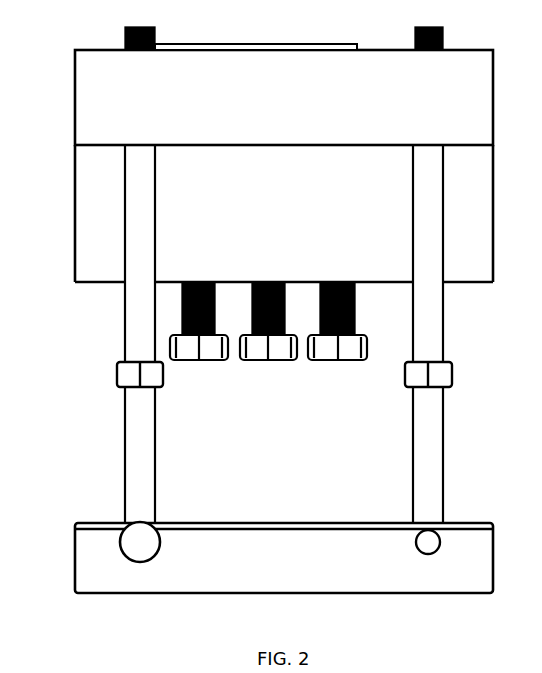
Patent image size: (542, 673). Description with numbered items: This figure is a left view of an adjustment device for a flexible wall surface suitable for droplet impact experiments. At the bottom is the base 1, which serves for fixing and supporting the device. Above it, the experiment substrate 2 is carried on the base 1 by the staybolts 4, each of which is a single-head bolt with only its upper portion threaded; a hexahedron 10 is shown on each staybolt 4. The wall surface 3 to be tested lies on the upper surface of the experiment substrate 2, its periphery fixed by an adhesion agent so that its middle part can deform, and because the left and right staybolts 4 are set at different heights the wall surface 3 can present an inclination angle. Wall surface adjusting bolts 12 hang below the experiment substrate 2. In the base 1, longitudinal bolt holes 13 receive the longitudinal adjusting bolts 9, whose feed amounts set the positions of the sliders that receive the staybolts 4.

The base 1 is at (237, 542).
The experiment substrate 2 is at (95, 228).
The wall surface to be tested 3 is at (270, 46).
The staybolt 4 is at (137, 433).
The longitudinal adjusting bolt 9 is at (135, 540).
The hexahedron 10 is at (120, 362).
The wall surface adjusting bolt 12 is at (268, 345).
The longitudinal bolt hole 13 is at (432, 535).